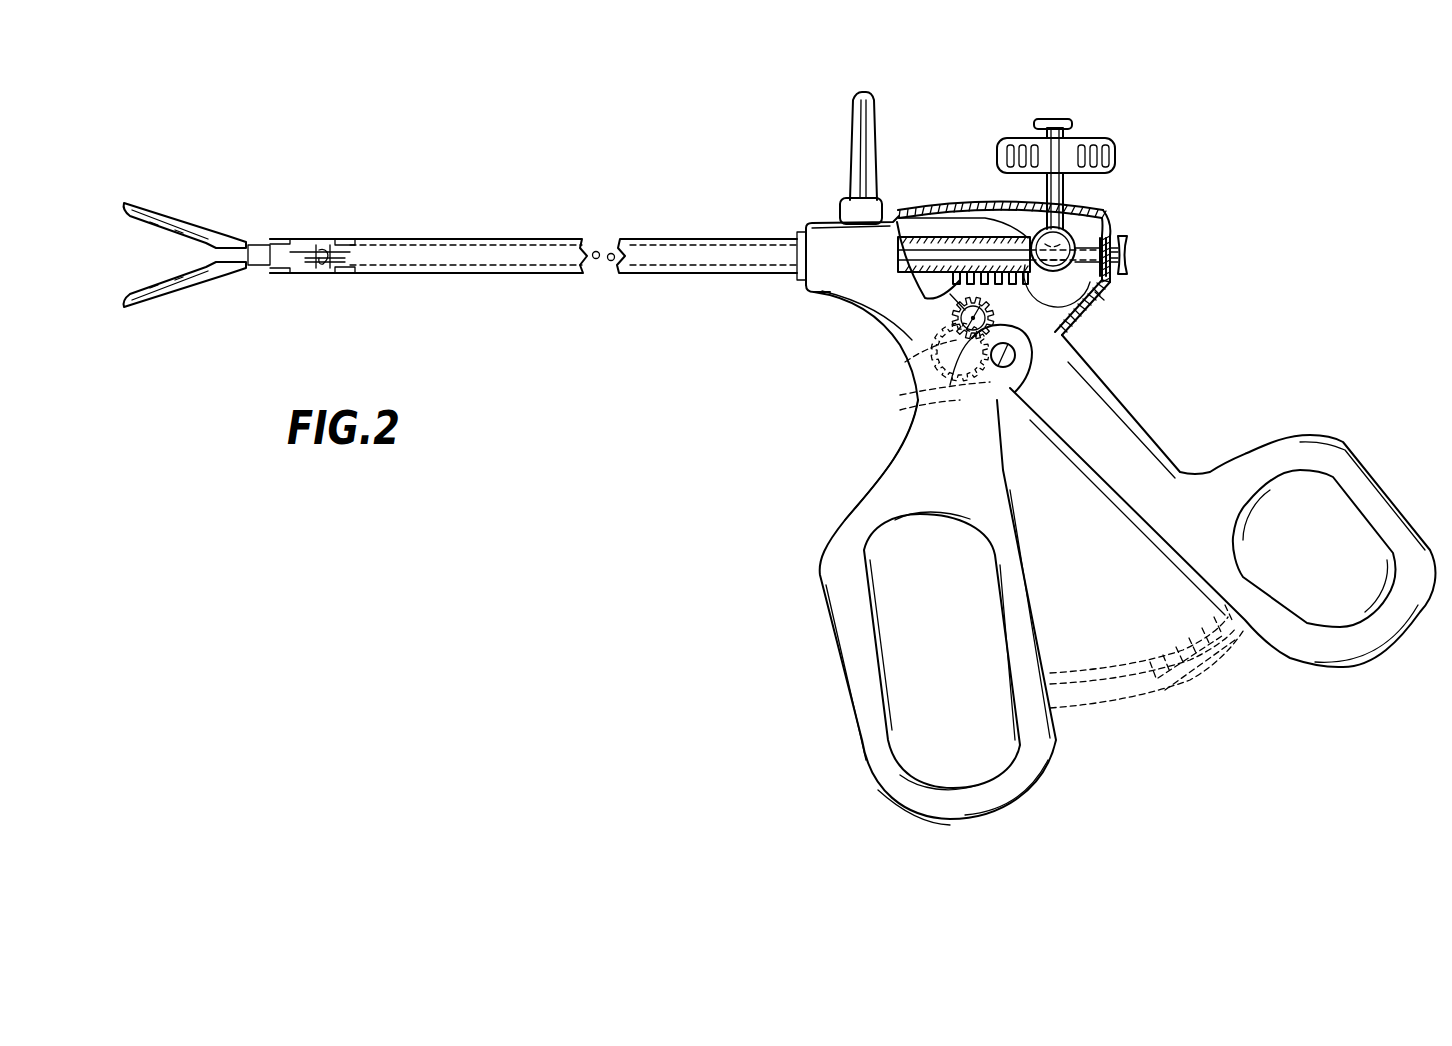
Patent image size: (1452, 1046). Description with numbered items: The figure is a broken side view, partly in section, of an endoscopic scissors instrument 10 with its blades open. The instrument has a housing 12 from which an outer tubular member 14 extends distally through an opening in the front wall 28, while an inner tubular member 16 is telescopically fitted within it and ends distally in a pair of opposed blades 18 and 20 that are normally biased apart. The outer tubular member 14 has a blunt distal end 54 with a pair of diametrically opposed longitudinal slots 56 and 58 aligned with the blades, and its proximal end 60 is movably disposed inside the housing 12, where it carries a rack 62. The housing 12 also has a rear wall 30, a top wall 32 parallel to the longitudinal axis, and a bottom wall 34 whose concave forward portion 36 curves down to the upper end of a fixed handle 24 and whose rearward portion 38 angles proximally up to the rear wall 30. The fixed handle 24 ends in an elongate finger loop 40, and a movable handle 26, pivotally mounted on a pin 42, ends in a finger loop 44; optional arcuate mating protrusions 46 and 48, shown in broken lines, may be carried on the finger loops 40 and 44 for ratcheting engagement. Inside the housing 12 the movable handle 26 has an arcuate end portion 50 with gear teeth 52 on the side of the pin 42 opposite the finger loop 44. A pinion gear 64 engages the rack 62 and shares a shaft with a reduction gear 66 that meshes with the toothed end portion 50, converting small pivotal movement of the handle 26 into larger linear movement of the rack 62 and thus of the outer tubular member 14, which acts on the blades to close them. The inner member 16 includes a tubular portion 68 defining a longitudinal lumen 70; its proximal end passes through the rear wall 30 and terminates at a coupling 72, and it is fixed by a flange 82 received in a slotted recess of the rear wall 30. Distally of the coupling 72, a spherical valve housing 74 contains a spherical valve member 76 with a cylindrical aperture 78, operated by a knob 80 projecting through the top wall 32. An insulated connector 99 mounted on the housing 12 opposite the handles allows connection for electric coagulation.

The endoscopic scissors instrument 10 is at (1163, 167).
The housing 12 is at (808, 220).
The outer tubular member 14 is at (411, 239).
The inner tubular member 16 is at (349, 239).
The blade 18 is at (131, 202).
The blade 20 is at (130, 308).
The fixed handle 24 is at (824, 600).
The movable handle 26 is at (1297, 433).
The front wall 28 is at (800, 268).
The rear wall 30 is at (1116, 240).
The top wall 32 is at (905, 211).
The bottom wall 34 is at (815, 302).
The concave forward portion 36 is at (906, 425).
The rearward portion 38 is at (1083, 328).
The finger loop 40 is at (988, 820).
The pin 42 is at (1018, 356).
The finger loop 44 is at (1324, 668).
The arcuate mating protrusion 46 is at (1104, 722).
The arcuate mating protrusion 48 is at (1220, 672).
The arcuate end portion 50 is at (920, 392).
The gear teeth 52 is at (900, 392).
The distal end 54 is at (249, 243).
The longitudinal slot 56 is at (274, 239).
The longitudinal slot 58 is at (270, 273).
The proximal end 60 is at (968, 207).
The rack 62 is at (920, 298).
The pinion gear 64 is at (938, 342).
The reduction gear 66 is at (950, 308).
The tubular portion 68 is at (320, 258).
The longitudinal lumen 70 is at (322, 262).
The coupling 72 is at (1128, 270).
The valve housing 74 is at (1104, 298).
The spherical valve member 76 is at (1112, 284).
The cylindrical aperture 78 is at (1068, 226).
The knob 80 is at (1100, 138).
The flange 82 is at (1113, 232).
The insulated connector 99 is at (868, 103).